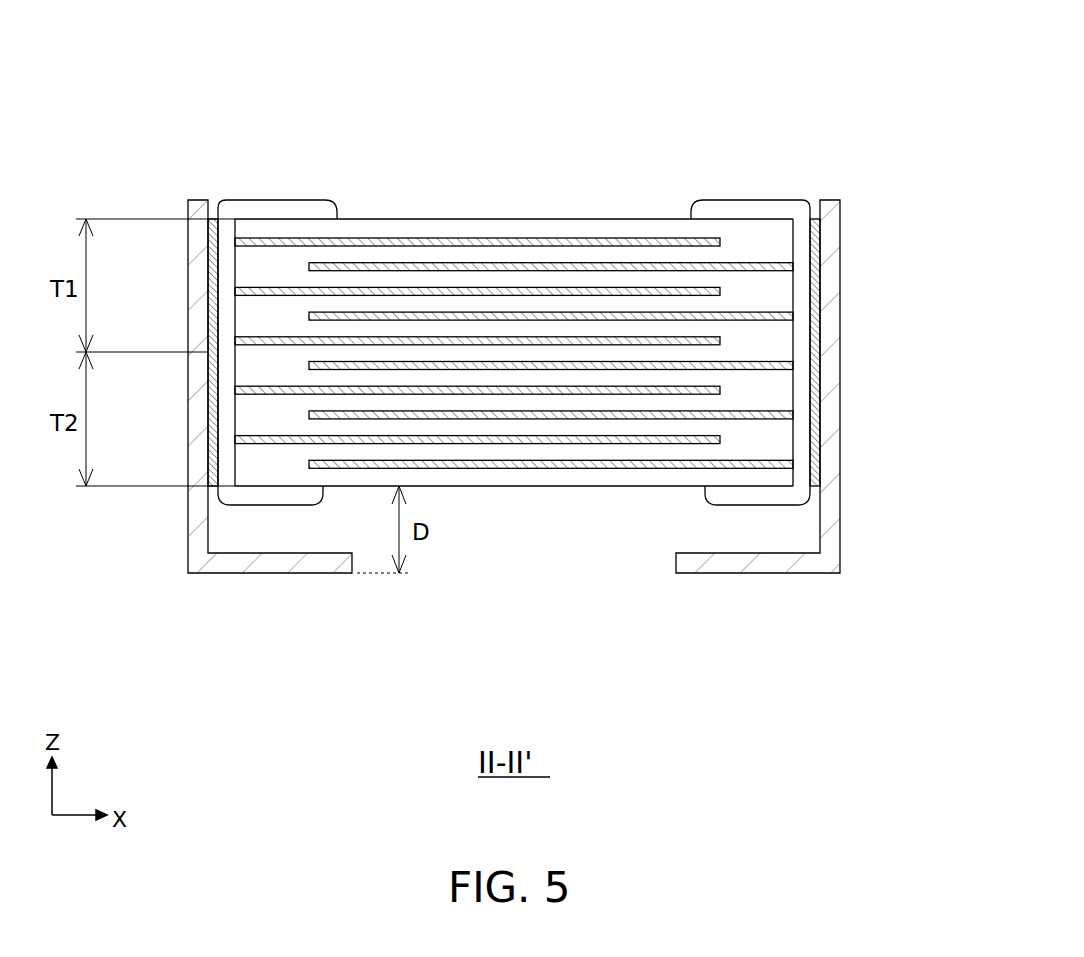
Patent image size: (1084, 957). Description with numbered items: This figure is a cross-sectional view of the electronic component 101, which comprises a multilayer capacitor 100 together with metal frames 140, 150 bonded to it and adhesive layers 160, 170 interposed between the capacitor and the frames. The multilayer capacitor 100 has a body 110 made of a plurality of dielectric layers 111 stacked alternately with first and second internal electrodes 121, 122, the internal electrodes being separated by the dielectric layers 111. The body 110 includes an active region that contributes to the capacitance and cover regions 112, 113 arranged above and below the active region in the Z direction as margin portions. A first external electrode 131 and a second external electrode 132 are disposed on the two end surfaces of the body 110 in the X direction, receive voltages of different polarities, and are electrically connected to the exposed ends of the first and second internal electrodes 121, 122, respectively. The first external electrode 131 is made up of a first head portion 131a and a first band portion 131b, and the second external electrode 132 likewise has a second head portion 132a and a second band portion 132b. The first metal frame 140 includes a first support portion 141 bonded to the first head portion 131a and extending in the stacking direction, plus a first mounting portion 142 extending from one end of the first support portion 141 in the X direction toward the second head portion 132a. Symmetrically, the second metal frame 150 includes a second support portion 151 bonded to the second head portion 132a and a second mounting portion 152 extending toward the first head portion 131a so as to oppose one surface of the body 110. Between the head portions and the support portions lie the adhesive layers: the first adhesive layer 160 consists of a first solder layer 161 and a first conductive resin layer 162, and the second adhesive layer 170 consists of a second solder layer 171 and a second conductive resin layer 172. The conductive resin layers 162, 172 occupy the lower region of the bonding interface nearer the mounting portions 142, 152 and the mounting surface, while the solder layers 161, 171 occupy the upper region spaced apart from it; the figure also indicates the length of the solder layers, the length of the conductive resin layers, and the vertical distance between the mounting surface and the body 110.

The electronic component 101 is at (402, 37).
The multilayer capacitor 100 is at (549, 207).
The body 110 is at (518, 218).
The dielectric layer 111 is at (587, 278).
The cover region 112 is at (443, 230).
The cover region 113 is at (548, 478).
The first internal electrode 121 is at (370, 243).
The second internal electrode 122 is at (647, 265).
The first external electrode 131 is at (317, 134).
The first head portion 131a is at (225, 252).
The first band portion 131b is at (288, 200).
The second external electrode 132 is at (872, 134).
The second head portion 132a is at (807, 252).
The second band portion 132b is at (742, 200).
The first metal frame 140 is at (360, 686).
The first support portion 141 is at (202, 520).
The first mounting portion 142 is at (313, 565).
The second metal frame 150 is at (803, 688).
The second support portion 151 is at (825, 515).
The second mounting portion 152 is at (712, 565).
The first adhesive layer 160 is at (197, 660).
The first solder layer 161 is at (207, 300).
The first conductive resin layer 162 is at (207, 433).
The second adhesive layer 170 is at (958, 650).
The second solder layer 171 is at (814, 295).
The second conductive resin layer 172 is at (818, 410).